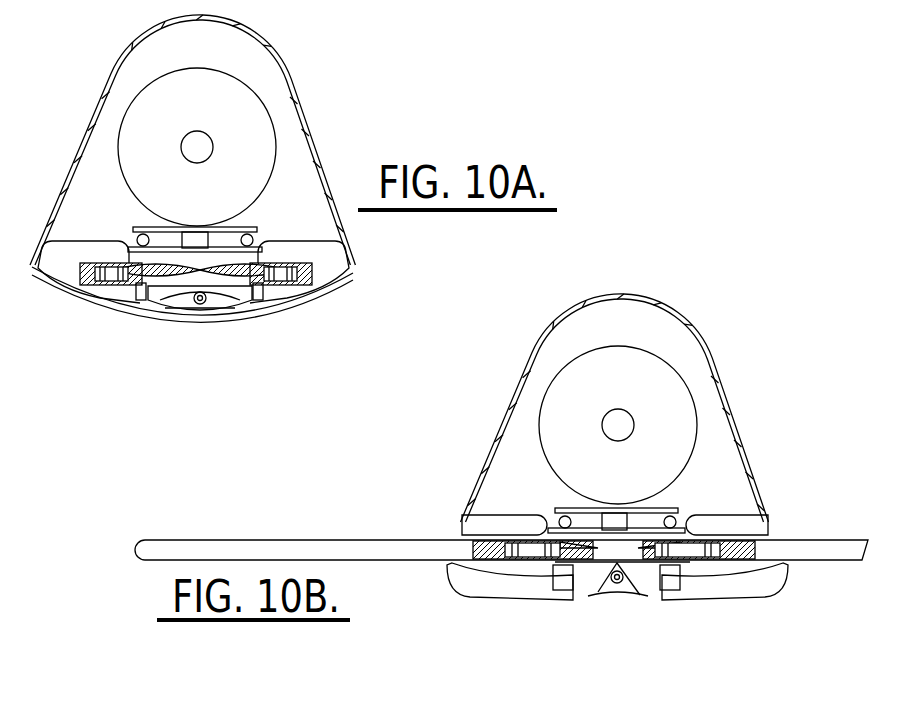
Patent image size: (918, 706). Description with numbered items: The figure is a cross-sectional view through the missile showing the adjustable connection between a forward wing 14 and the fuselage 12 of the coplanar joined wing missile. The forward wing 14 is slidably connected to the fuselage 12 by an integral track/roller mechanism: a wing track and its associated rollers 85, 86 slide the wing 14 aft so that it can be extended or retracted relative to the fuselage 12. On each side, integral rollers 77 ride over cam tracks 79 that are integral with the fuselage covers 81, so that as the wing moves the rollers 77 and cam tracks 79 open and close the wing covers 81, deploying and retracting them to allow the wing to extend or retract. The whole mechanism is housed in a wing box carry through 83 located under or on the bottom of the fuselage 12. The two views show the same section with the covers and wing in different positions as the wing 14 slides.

In FIG. 10A, the fuselage 12 is at (288, 66).
In FIG. 10B, the fuselage 12 is at (720, 374).
In FIG. 10A, the forward wing 14 is at (335, 268).
In FIG. 10B, the forward wing 14 is at (405, 548).
In FIG. 10A, the roller 77 is at (148, 298).
In FIG. 10B, the roller 77 is at (560, 560).
In FIG. 10A, the cam track 79 is at (138, 290).
In FIG. 10B, the cam track 79 is at (562, 590).
In FIG. 10A, the fuselage cover 81 is at (92, 300).
In FIG. 10B, the fuselage cover 81 is at (508, 598).
In FIG. 10A, the wing box carry through 83 is at (200, 304).
In FIG. 10B, the wing box carry through 83 is at (617, 585).
In FIG. 10A, the wing track 85 is at (197, 238).
In FIG. 10B, the wing track 85 is at (617, 513).
In FIG. 10A, the roller 86 is at (253, 241).
In FIG. 10B, the roller 86 is at (676, 522).